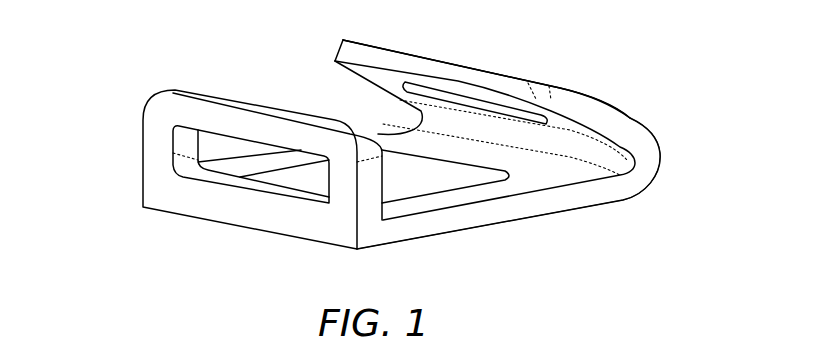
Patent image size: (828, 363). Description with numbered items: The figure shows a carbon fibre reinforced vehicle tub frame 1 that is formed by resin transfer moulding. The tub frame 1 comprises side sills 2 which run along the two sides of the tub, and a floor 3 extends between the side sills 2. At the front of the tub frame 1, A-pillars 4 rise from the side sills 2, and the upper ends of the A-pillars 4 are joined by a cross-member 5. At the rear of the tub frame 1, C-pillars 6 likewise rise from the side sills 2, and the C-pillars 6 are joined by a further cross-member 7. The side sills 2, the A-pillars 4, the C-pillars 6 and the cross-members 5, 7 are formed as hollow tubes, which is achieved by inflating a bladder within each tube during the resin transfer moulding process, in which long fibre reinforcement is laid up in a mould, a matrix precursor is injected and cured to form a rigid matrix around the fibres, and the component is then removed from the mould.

The vehicle tub frame 1 is at (573, 67).
The side sills 2 is at (386, 135).
The floor 3 is at (430, 182).
The A-pillars 4 is at (416, 90).
The cross-member 5 is at (485, 73).
The C-pillars 6 is at (150, 141).
The cross-member 7 is at (233, 120).